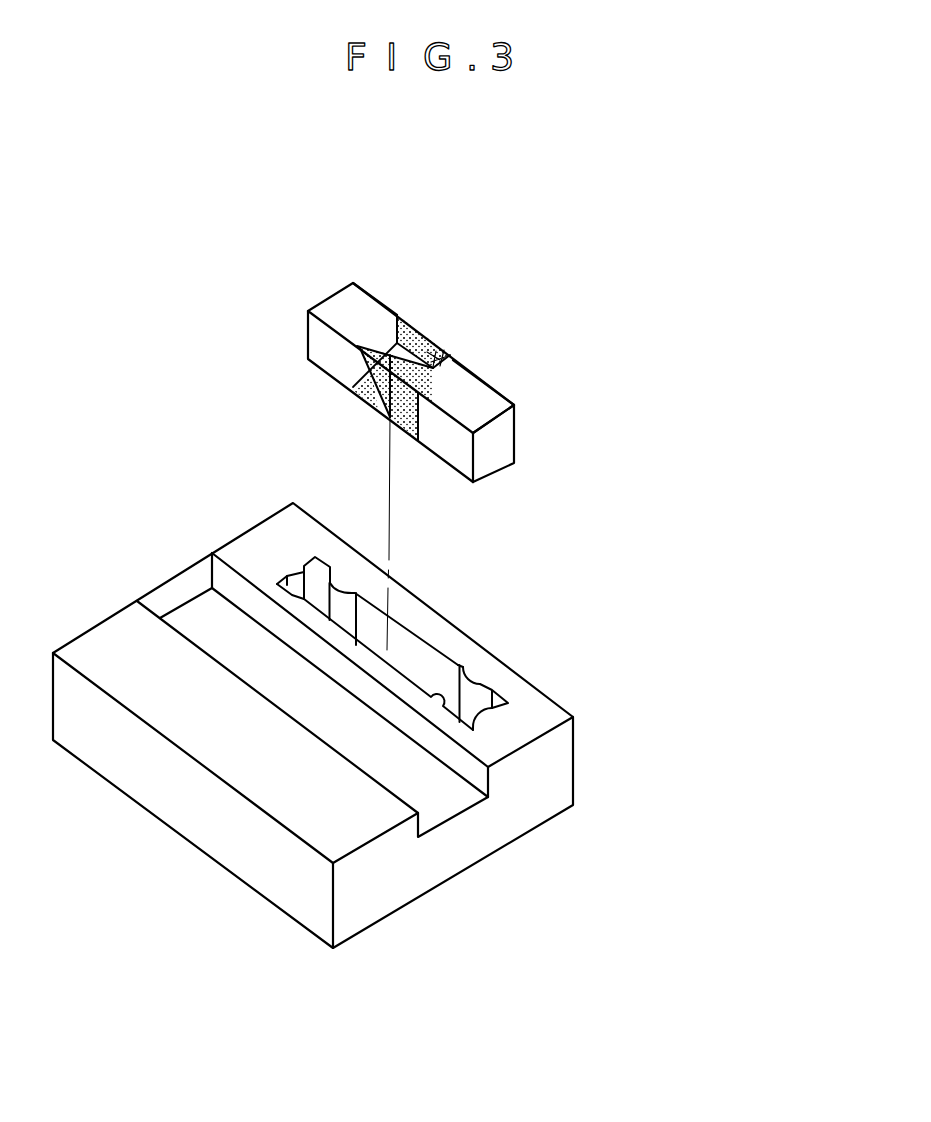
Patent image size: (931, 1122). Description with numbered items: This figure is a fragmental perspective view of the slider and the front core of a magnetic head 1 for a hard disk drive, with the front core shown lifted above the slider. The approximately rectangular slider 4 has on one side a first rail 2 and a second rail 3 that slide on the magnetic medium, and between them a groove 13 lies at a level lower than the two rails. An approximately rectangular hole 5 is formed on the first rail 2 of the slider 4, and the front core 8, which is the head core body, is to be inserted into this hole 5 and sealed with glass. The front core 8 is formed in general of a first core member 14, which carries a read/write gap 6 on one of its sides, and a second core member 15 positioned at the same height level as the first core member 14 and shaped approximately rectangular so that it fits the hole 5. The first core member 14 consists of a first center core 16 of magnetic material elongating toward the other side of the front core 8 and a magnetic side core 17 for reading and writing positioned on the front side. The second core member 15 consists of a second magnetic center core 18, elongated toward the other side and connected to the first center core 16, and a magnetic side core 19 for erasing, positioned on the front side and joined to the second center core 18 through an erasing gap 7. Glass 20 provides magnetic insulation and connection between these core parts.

The magnetic head 1 is at (635, 258).
The first rail 2 is at (262, 543).
The second rail 3 is at (110, 640).
The slider 4 is at (557, 683).
The hole 5 is at (423, 665).
The read/write gap 6 is at (397, 315).
The erasing gap 7 is at (440, 373).
The front core 8 is at (548, 290).
The groove 13 is at (197, 620).
The first core member 14 is at (377, 290).
The second core member 15 is at (522, 400).
The first center core 16 is at (377, 371).
The side core 17 is at (320, 333).
The second center core 18 is at (450, 357).
The side core 19 is at (492, 455).
The glass 20 is at (372, 410).